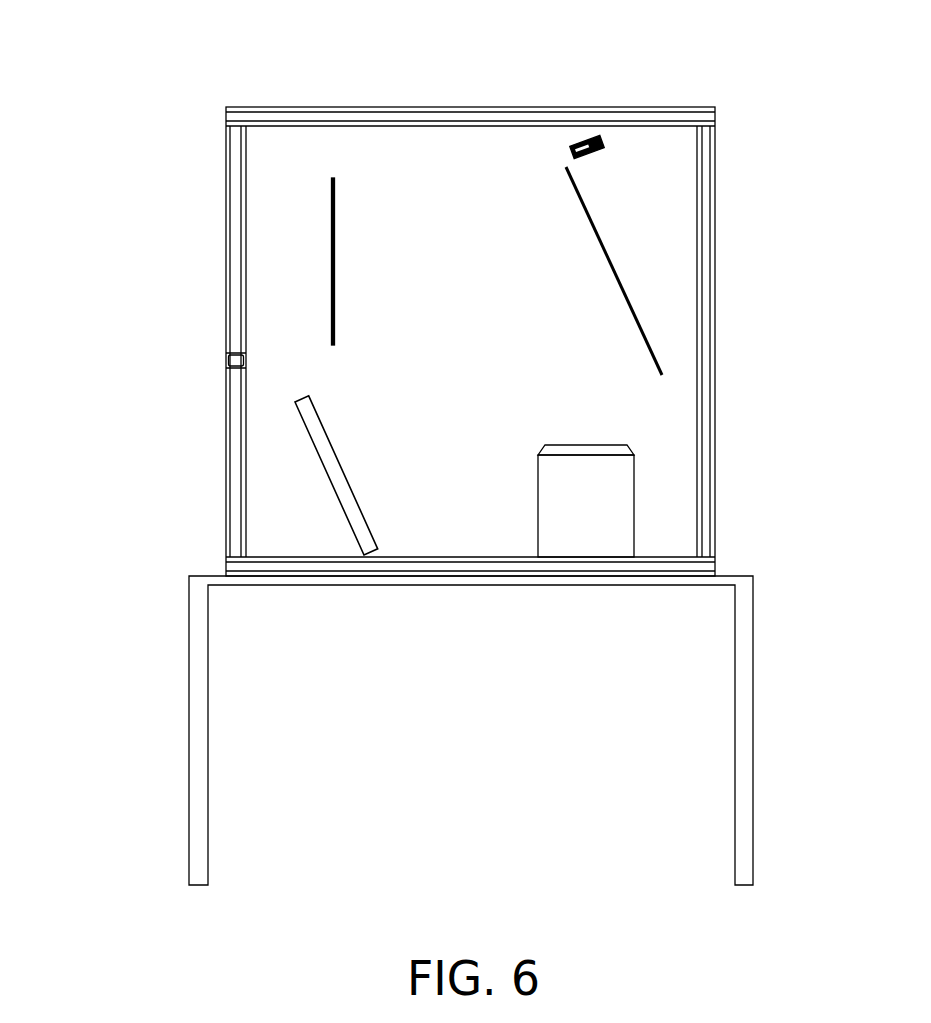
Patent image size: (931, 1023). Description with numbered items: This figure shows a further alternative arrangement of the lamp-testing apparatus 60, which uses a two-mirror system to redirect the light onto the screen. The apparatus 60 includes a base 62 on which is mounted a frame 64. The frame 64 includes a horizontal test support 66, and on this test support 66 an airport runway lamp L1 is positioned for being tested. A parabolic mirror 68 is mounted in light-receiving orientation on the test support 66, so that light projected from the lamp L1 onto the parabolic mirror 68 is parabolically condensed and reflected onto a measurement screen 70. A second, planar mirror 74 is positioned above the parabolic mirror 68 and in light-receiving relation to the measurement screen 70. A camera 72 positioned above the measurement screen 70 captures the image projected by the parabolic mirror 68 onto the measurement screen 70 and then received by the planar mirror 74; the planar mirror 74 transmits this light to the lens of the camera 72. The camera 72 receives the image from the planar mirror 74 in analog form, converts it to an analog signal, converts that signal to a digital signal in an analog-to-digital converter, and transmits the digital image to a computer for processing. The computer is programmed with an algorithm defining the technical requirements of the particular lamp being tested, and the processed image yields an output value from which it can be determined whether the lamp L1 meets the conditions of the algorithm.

The apparatus 60 is at (124, 158).
The base 62 is at (197, 660).
The frame 64 is at (258, 272).
The horizontal test support 66 is at (272, 557).
The parabolic mirror 68 is at (323, 462).
The measurement screen 70 is at (617, 272).
The camera 72 is at (588, 137).
The planar mirror 74 is at (338, 222).
The airport runway lamp L1 is at (615, 473).